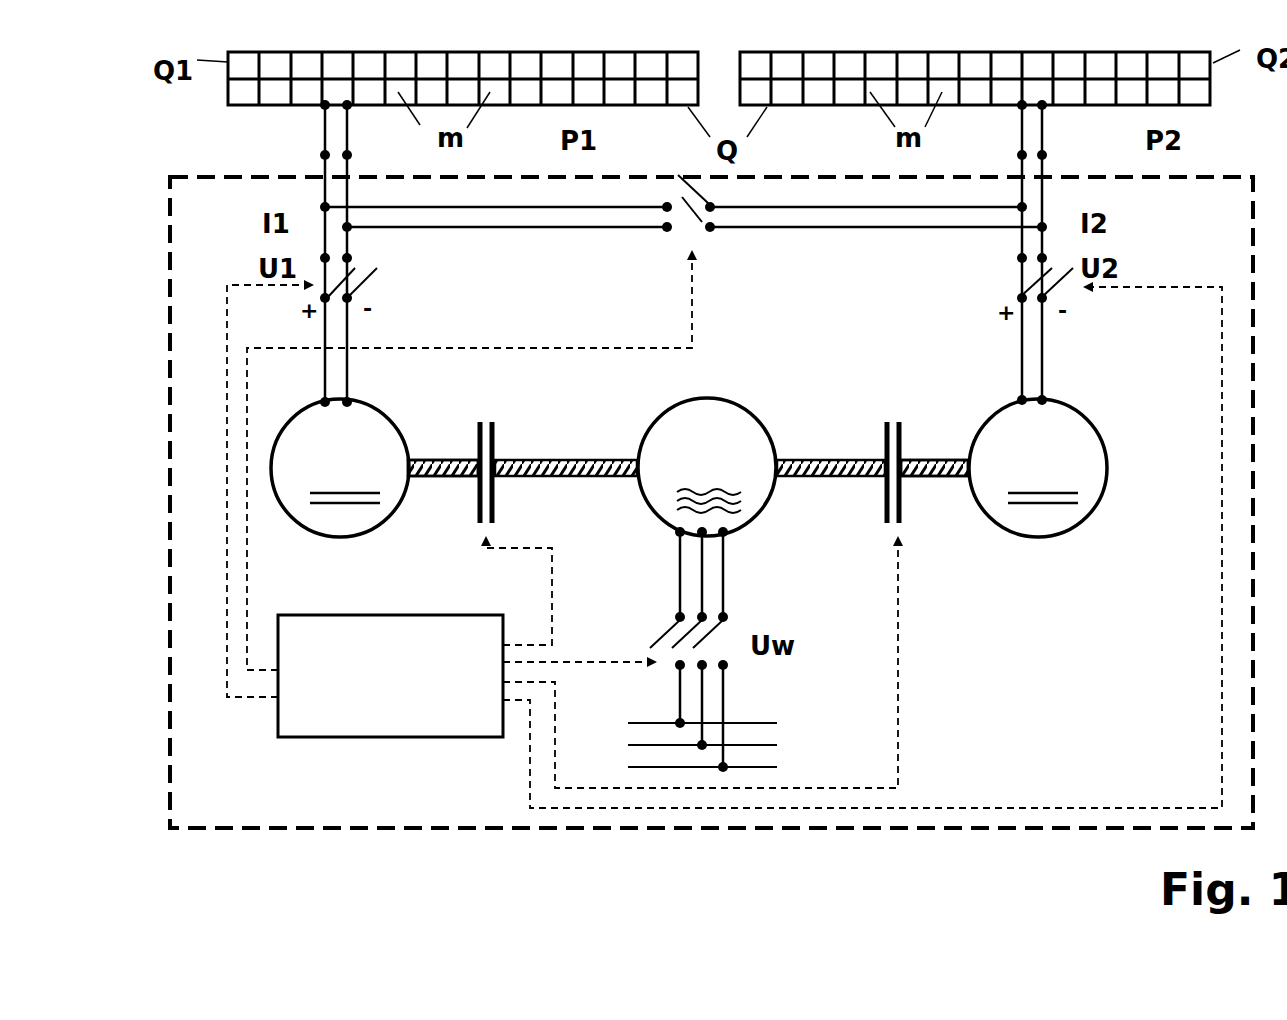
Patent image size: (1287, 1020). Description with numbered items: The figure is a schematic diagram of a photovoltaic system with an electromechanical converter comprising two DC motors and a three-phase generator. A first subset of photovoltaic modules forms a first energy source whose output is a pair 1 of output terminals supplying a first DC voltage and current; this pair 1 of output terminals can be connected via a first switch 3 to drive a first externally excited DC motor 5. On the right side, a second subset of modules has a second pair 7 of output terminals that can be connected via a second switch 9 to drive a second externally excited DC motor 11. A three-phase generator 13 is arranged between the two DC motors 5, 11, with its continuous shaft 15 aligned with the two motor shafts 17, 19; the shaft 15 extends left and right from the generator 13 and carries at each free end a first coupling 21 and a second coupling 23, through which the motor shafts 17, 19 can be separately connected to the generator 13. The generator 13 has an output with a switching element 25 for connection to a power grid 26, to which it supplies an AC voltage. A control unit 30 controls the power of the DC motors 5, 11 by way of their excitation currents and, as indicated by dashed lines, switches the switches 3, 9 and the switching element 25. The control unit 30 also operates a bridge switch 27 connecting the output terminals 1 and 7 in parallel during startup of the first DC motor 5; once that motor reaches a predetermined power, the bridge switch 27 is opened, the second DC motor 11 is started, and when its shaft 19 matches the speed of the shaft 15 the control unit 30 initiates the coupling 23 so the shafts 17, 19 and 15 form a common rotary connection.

The pair of output terminals 1 is at (322, 154).
The first switch 3 is at (350, 287).
The first externally excited DC motor 5 is at (305, 408).
The second pair of output terminals 7 is at (1037, 153).
The second switch 9 is at (1040, 292).
The second externally excited DC motor 11 is at (1065, 410).
The three-phase generator 13 is at (707, 397).
The generator shaft 15 is at (523, 477).
The first motor shaft 17 is at (440, 458).
The second motor shaft 19 is at (918, 477).
The first coupling 21 is at (490, 422).
The second coupling 23 is at (903, 420).
The switching element 25 is at (680, 632).
The power grid 26 is at (670, 765).
The bridge switch 27 is at (688, 195).
The control unit 30 is at (360, 737).